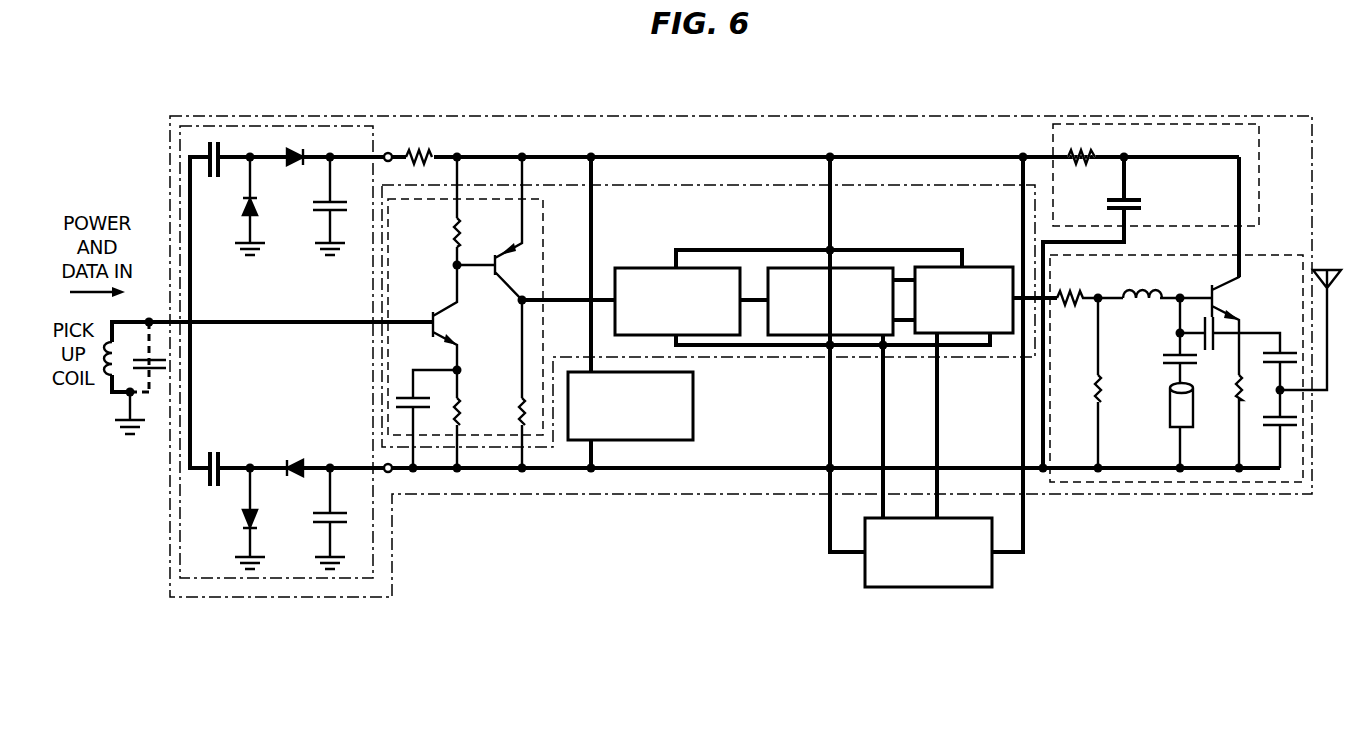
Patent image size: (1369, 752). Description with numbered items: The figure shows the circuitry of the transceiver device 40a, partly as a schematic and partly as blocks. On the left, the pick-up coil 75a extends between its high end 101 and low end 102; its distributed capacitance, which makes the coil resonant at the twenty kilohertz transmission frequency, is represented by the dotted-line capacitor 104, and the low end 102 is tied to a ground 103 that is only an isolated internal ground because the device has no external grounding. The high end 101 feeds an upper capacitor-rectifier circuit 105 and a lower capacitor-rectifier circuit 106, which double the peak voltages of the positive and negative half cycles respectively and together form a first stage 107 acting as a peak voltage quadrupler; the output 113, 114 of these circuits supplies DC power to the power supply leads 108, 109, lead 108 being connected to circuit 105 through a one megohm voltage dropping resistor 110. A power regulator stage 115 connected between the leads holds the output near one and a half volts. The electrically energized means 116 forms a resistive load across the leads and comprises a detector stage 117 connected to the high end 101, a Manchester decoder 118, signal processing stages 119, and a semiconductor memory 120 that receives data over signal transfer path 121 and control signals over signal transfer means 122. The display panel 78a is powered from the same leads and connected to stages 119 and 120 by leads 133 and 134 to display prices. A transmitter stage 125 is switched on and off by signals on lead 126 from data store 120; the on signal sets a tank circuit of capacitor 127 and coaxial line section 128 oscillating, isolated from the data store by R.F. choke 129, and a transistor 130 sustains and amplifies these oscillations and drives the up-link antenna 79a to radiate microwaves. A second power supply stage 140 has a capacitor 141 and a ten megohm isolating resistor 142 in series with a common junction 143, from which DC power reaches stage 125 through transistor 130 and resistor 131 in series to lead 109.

The transceiver device 40a is at (540, 116).
The pick-up coil 75a is at (90, 401).
The display panel 78a is at (865, 568).
The up-link antenna 79a is at (1332, 342).
The high end of coil 101 is at (149, 320).
The low end of coil 102 is at (108, 388).
The ground 103 is at (130, 435).
The dotted-line capacitor 104 is at (157, 372).
The upper capacitor-rectifier circuit 105 is at (287, 232).
The lower capacitor-rectifier circuit 106 is at (287, 445).
The first stage 107 is at (255, 126).
The power supply lead 108 is at (750, 157).
The power supply lead 109 is at (488, 347).
The voltage dropping resistor 110 is at (418, 150).
The output 113 is at (388, 152).
The output 114 is at (387, 478).
The power regulator stage 115 is at (693, 396).
The electrically energized means 116 is at (635, 183).
The detector stage 117 is at (543, 275).
The Manchester decoder 118 is at (628, 268).
The signal processing stages 119 is at (780, 268).
The semiconductor memory 120 is at (985, 267).
The signal transfer path 121 is at (905, 282).
The signal transfer means 122 is at (900, 323).
The transmitter stage 125 is at (1176, 349).
The lead 126 is at (1028, 320).
The capacitor 127 is at (1172, 355).
The coaxial line section 128 is at (1168, 405).
The R.F. choke 129 is at (1145, 290).
The transistor 130 is at (1222, 296).
The resistor 131 is at (1232, 390).
The lead 133 is at (882, 440).
The lead 134 is at (940, 437).
The power supply stage 140 is at (1174, 267).
The capacitor 141 is at (1135, 200).
The isolating resistor 142 is at (1078, 150).
The common junction 143 is at (1124, 153).